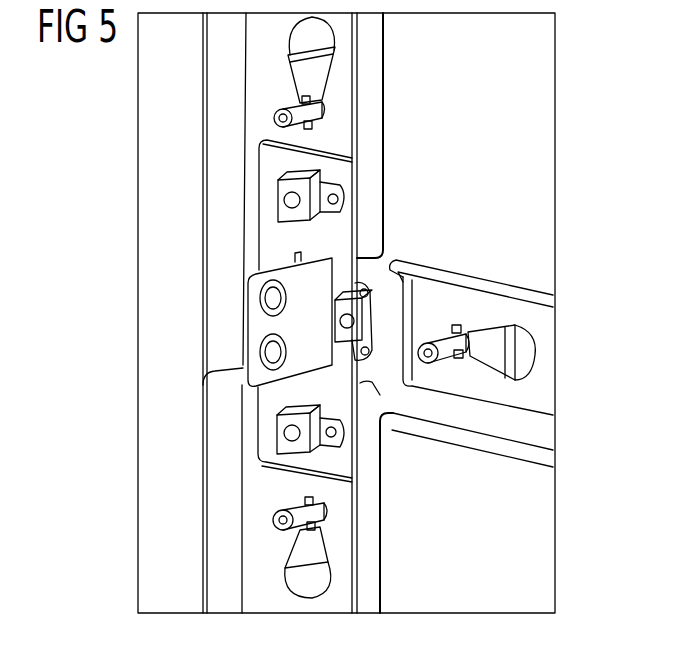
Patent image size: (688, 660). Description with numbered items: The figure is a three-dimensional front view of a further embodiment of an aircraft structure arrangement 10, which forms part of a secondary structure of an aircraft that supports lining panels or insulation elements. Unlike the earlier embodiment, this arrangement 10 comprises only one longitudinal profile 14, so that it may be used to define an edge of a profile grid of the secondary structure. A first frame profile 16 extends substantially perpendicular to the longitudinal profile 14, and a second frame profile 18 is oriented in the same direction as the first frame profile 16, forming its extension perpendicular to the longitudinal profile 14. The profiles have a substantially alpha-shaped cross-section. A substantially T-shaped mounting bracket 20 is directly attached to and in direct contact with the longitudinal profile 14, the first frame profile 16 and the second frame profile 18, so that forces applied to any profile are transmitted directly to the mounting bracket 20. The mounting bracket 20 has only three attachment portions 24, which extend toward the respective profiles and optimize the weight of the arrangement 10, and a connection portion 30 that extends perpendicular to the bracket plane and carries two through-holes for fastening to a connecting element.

The aircraft structure arrangement 10 is at (580, 48).
The second longitudinal profile 14 is at (490, 280).
The first frame profile 16 is at (384, 69).
The second frame profile 18 is at (365, 557).
The mounting bracket 20 is at (343, 280).
The attachment portions 24 is at (268, 140).
The connection portion 30 is at (241, 337).